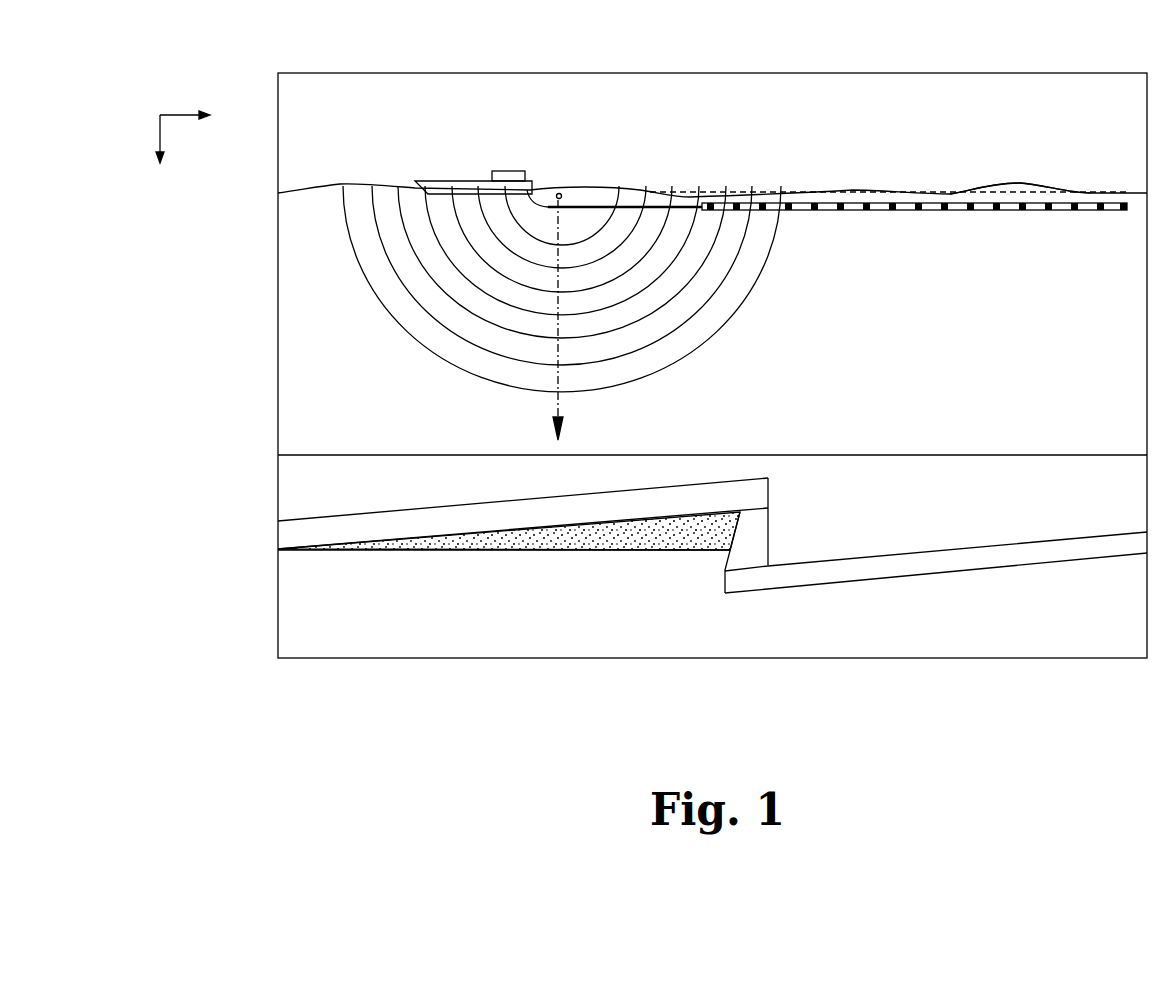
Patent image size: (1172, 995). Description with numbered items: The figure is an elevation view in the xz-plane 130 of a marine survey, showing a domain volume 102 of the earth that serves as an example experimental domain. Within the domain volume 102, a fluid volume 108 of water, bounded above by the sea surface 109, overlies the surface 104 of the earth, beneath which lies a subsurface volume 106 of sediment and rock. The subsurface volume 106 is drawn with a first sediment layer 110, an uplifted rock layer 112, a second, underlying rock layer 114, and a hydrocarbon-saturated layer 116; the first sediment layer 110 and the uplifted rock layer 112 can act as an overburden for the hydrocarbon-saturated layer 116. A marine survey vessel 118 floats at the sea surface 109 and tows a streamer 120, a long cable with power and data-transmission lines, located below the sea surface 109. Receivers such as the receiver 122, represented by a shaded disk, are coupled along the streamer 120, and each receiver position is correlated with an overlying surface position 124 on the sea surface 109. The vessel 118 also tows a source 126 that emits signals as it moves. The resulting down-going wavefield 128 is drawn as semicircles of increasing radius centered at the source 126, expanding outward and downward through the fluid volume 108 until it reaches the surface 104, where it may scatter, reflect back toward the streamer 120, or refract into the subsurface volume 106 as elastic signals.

The domain volume 102 is at (190, 273).
The surface 104 is at (342, 452).
The subsurface volume 106 is at (300, 472).
The fluid volume 108 is at (298, 349).
The sea surface 109 is at (853, 189).
The first sediment layer 110 is at (1005, 513).
The uplifted rock layer 112 is at (300, 537).
The second, underlying rock layer 114 is at (415, 645).
The hydrocarbon-saturated layer 116 is at (505, 553).
The marine survey vessel 118 is at (462, 180).
The streamer 120 is at (903, 224).
The receiver 122 is at (1040, 211).
The surface position 124 is at (1040, 187).
The source 126 is at (560, 194).
The down-going wavefield 128 is at (745, 308).
The xz-plane 130 is at (160, 115).